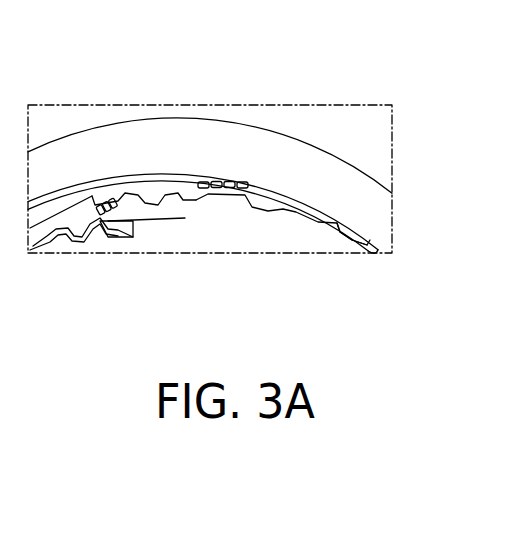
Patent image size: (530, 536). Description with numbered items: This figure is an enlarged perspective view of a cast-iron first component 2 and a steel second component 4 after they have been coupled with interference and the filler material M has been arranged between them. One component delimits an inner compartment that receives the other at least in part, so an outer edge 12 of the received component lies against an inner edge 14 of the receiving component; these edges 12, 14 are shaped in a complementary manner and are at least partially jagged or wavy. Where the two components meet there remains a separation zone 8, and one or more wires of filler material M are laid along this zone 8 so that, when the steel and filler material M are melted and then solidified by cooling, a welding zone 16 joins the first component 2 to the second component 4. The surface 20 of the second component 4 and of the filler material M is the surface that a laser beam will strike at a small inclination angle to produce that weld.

The first component 2 is at (246, 104).
The second component 4 is at (361, 263).
The separation zone 8 is at (167, 174).
The outer edge 12 is at (102, 226).
The inner edge 14 is at (255, 190).
The welding zone 16 is at (122, 180).
The surface 20 is at (162, 212).
The filler material M is at (212, 207).